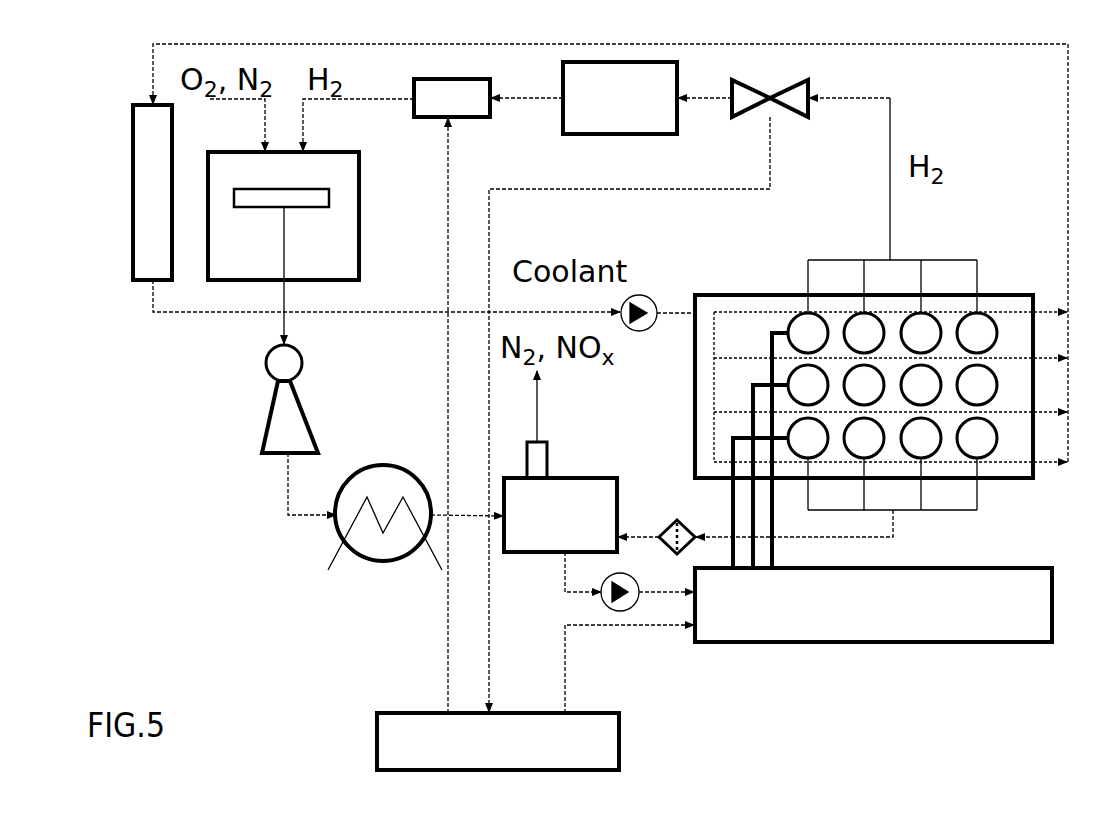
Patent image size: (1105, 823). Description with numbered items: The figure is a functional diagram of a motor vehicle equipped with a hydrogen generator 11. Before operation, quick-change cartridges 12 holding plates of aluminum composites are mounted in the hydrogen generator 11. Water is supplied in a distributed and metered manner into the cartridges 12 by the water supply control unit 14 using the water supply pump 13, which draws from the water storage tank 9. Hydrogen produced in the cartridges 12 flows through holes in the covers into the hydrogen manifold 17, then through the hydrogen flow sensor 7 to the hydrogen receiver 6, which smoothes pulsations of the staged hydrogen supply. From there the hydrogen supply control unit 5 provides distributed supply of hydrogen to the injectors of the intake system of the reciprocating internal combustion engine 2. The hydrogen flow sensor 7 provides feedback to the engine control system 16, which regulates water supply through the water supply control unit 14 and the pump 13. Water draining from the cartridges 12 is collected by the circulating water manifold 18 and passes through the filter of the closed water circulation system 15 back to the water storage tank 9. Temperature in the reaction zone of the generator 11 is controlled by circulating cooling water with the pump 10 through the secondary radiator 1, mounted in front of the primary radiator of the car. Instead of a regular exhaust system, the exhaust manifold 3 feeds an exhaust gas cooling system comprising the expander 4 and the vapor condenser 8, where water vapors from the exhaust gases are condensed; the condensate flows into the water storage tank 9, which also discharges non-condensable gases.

The secondary radiator 1 is at (133, 150).
The reciprocating internal combustion engine 2 is at (230, 262).
The exhaust manifold 3 is at (323, 208).
The expander 4 is at (307, 422).
The hydrogen supply control unit 5 is at (470, 98).
The hydrogen receiver 6 is at (657, 115).
The hydrogen flow sensor 7 is at (810, 105).
The vapor condenser 8 is at (397, 473).
The water storage tank 9 is at (602, 490).
The pump 10 is at (648, 297).
The hydrogen generator 11 is at (993, 293).
The quick-change cartridges 12 is at (980, 458).
The water supply pump 13 is at (622, 605).
The water supply control unit 14 is at (767, 623).
The filter of a closed water circulation system 15 is at (673, 520).
The engine control system 16 is at (415, 733).
The hydrogen manifold 17 is at (900, 258).
The circulating water manifold 18 is at (912, 515).